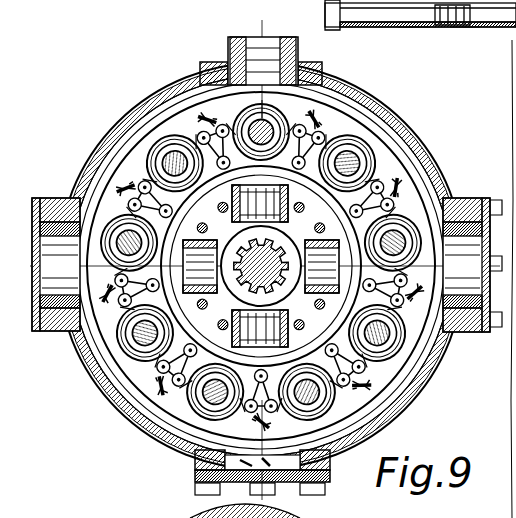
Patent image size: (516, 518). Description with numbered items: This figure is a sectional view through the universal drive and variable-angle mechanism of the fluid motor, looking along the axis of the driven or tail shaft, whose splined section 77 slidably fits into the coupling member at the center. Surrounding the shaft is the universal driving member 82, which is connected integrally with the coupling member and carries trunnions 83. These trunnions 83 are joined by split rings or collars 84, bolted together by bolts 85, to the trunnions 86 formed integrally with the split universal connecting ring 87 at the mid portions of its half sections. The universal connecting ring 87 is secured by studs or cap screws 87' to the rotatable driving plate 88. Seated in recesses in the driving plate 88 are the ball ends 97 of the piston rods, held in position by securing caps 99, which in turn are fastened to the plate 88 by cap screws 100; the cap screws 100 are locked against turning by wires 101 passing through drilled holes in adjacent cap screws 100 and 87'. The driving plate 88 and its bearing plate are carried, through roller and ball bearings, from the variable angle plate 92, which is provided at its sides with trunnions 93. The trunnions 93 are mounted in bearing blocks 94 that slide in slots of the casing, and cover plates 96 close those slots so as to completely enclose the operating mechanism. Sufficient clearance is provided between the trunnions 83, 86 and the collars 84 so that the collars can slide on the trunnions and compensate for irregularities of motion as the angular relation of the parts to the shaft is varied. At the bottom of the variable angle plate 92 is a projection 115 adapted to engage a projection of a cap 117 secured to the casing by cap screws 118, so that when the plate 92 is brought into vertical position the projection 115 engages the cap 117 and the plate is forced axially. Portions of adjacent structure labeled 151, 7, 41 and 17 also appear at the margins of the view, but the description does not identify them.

The universal driving member 82 is at (428, 387).
The variable angle plate 92 is at (138, 118).
The rotatable driving plate 88 is at (110, 405).
The trunnions 83 is at (400, 165).
The trunnions 86 is at (180, 128).
The cap screws 100 is at (333, 140).
The wires 101 is at (312, 128).
The bolts 85 is at (343, 150).
The split rings or collars 84 is at (366, 180).
The split universal connecting ring 87 is at (260, 269).
The studs or cap screws 87' is at (241, 61).
The trunnions 93 is at (48, 198).
The bearing blocks 94 is at (70, 198).
The cover plates 96 is at (42, 332).
The ball ends 97 is at (220, 70).
The securing caps 99 is at (288, 83).
The splined section 77 is at (355, 428).
The cap 117 is at (331, 476).
The projection 115 is at (282, 484).
The cap screws 118 is at (345, 498).
The bolt (adjacent figure) 151 is at (325, 8).
The shaft (adjacent figure) 7 is at (405, 27).
The member (adjacent figure) 41 is at (455, 27).
The housing (adjacent figure) 17 is at (112, 514).